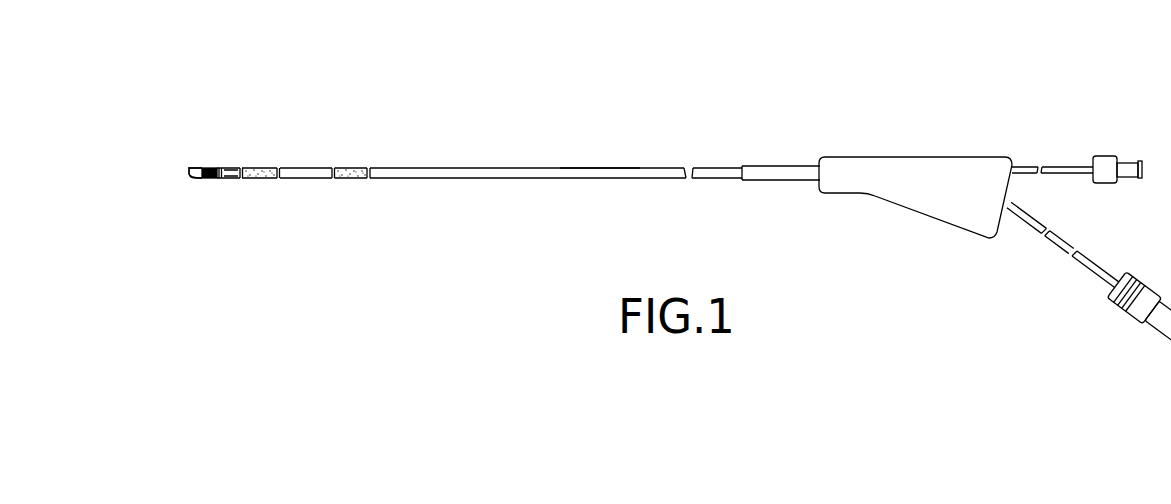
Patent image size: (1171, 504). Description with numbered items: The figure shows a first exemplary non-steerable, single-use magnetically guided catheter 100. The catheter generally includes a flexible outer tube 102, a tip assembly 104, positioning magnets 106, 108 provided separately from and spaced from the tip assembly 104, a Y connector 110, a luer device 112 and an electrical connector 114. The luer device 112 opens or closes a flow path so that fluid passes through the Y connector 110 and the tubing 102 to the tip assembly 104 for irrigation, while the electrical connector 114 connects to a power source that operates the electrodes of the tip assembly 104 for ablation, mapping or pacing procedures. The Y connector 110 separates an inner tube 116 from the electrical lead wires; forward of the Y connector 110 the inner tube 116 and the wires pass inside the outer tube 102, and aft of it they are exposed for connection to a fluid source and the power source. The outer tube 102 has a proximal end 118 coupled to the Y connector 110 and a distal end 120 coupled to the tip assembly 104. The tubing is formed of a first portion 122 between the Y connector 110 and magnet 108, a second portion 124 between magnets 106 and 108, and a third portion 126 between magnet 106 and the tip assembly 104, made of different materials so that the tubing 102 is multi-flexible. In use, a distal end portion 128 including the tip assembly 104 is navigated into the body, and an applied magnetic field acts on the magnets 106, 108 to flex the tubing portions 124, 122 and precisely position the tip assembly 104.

The magnetically guided catheter 100 is at (488, 74).
The flexible outer tube 102 is at (522, 180).
The tip assembly 104 is at (203, 170).
The positioning magnet 106 is at (262, 173).
The positioning magnet 108 is at (352, 173).
The Y connector 110 is at (890, 157).
The luer device 112 is at (1128, 176).
The electrical connector 114 is at (1140, 318).
The inner tube 116 is at (1027, 174).
The proximal end 118 is at (743, 180).
The distal end 120 is at (222, 168).
The first portion 122 is at (600, 168).
The second portion 124 is at (305, 170).
The third portion 126 is at (232, 168).
The distal end portion 128 is at (370, 182).